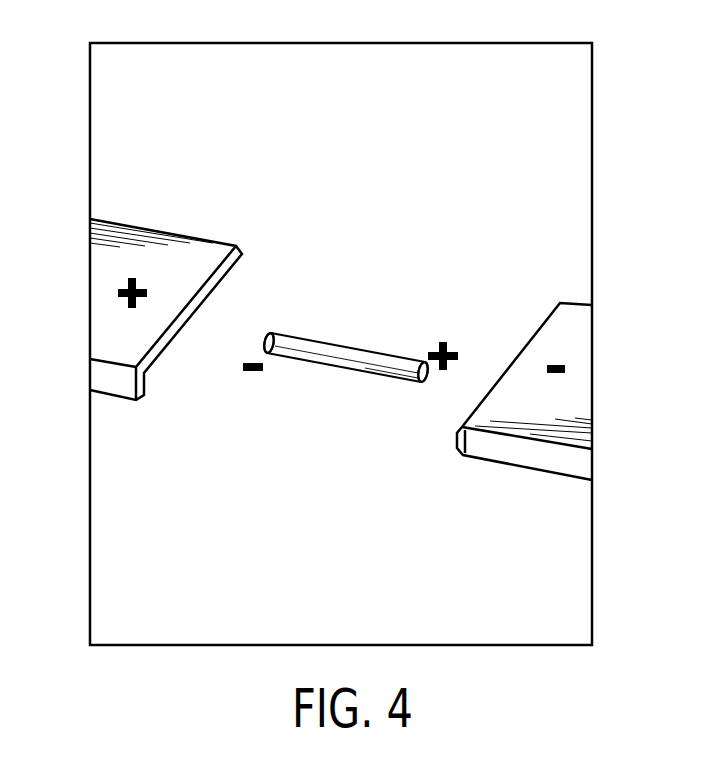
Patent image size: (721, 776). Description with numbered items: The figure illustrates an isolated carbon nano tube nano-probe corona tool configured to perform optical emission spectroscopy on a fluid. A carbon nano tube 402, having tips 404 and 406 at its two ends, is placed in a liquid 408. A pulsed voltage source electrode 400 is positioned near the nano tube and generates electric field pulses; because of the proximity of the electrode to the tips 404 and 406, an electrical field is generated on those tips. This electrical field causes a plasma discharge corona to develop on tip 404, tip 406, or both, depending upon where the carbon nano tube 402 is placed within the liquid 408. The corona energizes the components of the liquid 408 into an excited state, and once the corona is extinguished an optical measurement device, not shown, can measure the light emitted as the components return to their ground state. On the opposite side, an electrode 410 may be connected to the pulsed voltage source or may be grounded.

The pulsed voltage source electrode 400 is at (113, 262).
The carbon nano tube 402 is at (362, 359).
The tip 404 is at (280, 345).
The tip 406 is at (410, 378).
The liquid 408 is at (537, 253).
The electrode 410 is at (567, 417).